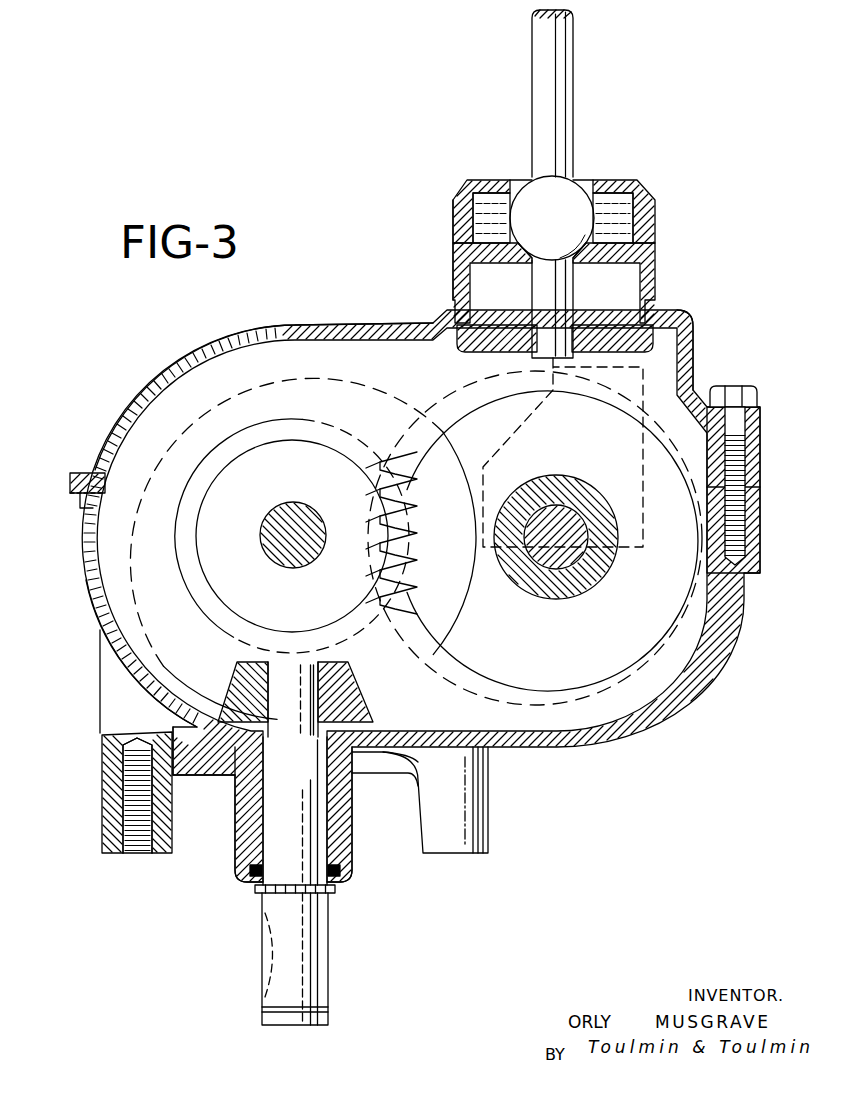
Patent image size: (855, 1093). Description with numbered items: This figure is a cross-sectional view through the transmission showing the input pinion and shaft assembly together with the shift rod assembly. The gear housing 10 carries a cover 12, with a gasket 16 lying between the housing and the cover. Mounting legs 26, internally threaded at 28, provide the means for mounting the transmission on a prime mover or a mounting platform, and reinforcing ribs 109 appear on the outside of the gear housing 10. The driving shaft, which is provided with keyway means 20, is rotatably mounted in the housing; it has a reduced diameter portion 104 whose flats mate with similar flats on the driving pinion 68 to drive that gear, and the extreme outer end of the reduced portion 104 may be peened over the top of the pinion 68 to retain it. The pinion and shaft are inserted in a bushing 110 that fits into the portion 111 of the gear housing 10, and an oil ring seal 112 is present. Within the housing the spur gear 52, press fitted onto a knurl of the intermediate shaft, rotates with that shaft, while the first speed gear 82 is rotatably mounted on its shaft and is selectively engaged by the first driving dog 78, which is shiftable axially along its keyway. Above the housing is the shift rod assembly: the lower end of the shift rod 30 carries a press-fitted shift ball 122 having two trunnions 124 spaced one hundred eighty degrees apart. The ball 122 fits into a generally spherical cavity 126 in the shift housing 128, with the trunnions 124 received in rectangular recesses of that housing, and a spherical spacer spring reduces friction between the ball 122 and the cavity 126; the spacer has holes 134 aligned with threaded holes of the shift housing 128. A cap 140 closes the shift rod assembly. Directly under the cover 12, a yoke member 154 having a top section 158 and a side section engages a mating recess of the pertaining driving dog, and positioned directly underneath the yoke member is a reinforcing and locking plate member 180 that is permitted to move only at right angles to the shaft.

The gear housing 10 is at (83, 578).
The cover 12 is at (130, 402).
The gasket 16 is at (68, 485).
The keyway means 20 is at (262, 960).
The mounting legs 26 is at (102, 782).
The internal threads 28 is at (136, 852).
The shift rod 30 is at (575, 96).
The spur gear 52 is at (296, 450).
The driving pinion 68 is at (360, 690).
The first driving dog 78 is at (619, 587).
The first speed gear 82 is at (428, 455).
The reduced diameter portion 104 is at (142, 690).
The reinforcing ribs 109 is at (207, 778).
The bushing 110 is at (249, 870).
The housing portion 111 is at (233, 852).
The oil ring seal 112 is at (243, 893).
The shift ball 122 is at (575, 191).
The trunnions 124 is at (487, 210).
The spherical cavity 126 is at (515, 257).
The shift housing 128 is at (455, 228).
The holes 134 is at (745, 545).
The cap 140 is at (655, 188).
The yoke member 154 is at (640, 490).
The top section 158 is at (597, 327).
The reinforcing and locking plate member 180 is at (645, 357).